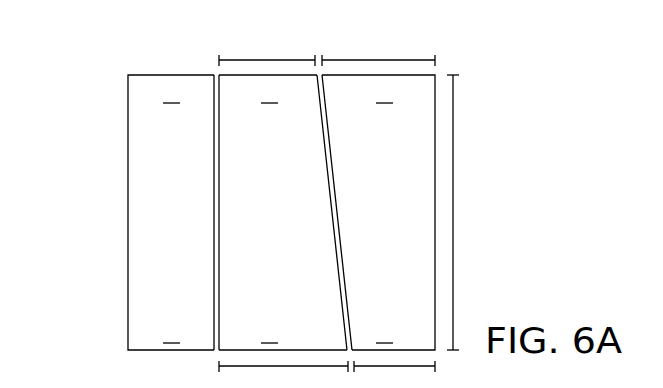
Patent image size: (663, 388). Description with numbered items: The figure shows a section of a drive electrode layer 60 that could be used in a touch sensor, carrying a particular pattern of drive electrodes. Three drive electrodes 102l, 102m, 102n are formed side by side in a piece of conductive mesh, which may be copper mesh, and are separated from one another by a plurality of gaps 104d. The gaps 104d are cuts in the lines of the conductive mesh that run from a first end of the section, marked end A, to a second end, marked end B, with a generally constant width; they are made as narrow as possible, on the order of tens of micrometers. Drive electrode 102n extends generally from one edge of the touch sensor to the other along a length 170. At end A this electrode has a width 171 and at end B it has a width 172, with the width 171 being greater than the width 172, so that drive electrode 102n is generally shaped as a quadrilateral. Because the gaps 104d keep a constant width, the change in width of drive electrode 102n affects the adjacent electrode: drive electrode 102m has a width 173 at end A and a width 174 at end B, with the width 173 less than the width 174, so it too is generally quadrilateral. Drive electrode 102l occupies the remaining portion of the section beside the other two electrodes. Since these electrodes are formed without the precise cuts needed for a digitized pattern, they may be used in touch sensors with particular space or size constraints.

The drive electrode layer 60 is at (472, 147).
The drive electrode 102l is at (153, 115).
The drive electrode 102m is at (253, 222).
The drive electrode 102n is at (372, 302).
The gaps 104d is at (217, 75).
The length 170 is at (470, 212).
The width 171 is at (378, 51).
The width 172 is at (394, 374).
The width 173 is at (267, 51).
The width 174 is at (283, 374).